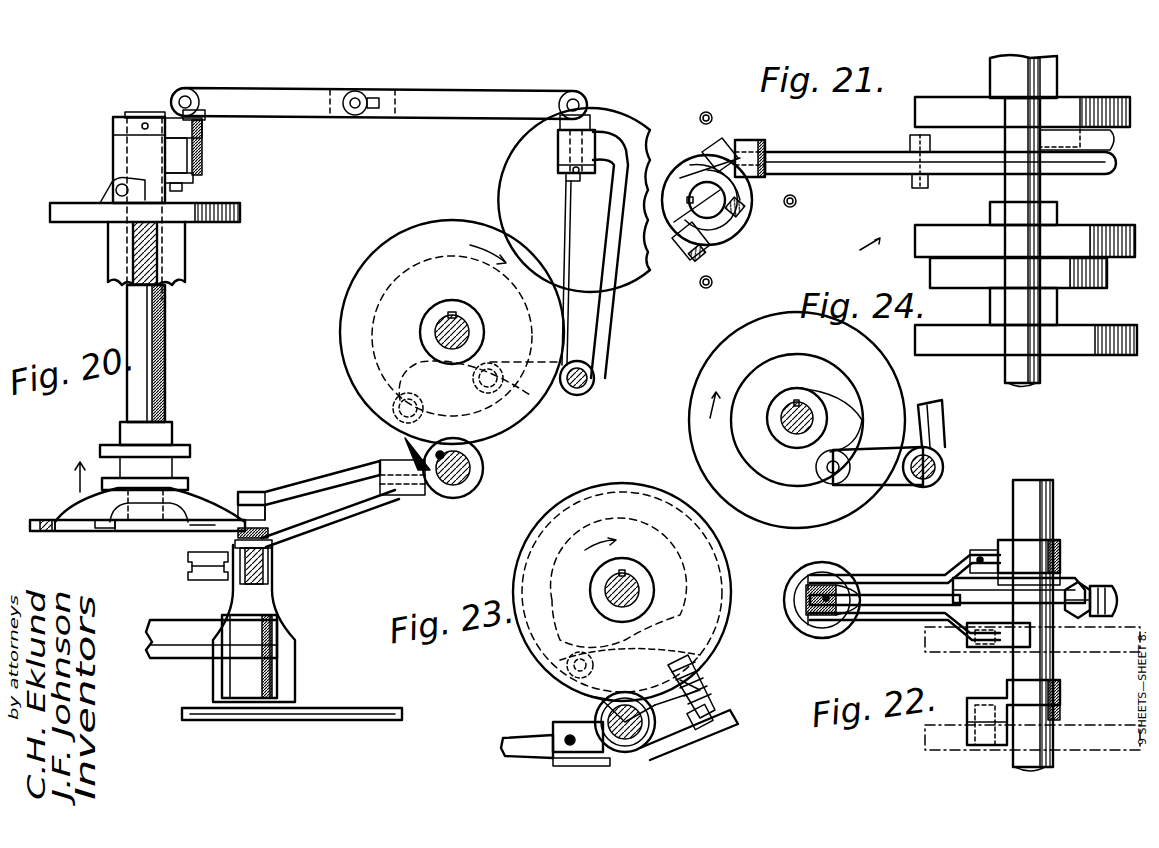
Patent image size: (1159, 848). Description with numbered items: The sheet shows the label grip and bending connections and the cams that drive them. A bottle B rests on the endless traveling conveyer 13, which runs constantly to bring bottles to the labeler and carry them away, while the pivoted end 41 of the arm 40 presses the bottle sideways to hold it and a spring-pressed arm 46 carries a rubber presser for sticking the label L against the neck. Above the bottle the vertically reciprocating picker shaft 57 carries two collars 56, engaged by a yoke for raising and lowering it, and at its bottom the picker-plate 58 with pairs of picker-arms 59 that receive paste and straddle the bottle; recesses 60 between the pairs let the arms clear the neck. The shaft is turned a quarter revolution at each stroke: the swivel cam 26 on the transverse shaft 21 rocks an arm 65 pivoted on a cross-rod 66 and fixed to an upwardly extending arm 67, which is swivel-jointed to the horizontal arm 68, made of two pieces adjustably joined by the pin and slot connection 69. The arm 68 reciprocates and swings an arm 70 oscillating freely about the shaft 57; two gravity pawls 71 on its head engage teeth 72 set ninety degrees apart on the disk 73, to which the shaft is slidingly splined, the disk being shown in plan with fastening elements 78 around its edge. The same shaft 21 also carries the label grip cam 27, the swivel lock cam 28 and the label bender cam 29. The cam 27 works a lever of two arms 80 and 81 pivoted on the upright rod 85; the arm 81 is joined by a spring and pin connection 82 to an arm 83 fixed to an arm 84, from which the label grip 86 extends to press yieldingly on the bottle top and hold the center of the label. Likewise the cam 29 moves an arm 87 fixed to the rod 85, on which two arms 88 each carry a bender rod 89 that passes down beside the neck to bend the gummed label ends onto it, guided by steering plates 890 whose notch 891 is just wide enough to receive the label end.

In FIG. 20, the traveling conveyer 13 is at (260, 720).
In FIG. 20, the second transverse shaft 21 is at (455, 318).
In FIG. 21, the second transverse shaft 21 is at (1005, 185).
In FIG. 24, the second transverse shaft 21 is at (787, 425).
In FIG. 23, the second transverse shaft 21 is at (640, 590).
In FIG. 21, the swivel cam 26 is at (1075, 97).
In FIG. 24, the swivel cam 26 is at (692, 462).
In FIG. 21, the label grip cam 27 is at (1078, 230).
In FIG. 23, the label grip cam 27 is at (730, 618).
In FIG. 22, the label grip cam 27 is at (1092, 652).
In FIG. 21, the swivel lock cam 28 is at (1080, 288).
In FIG. 20, the label bender cam 29 is at (428, 235).
In FIG. 21, the label bender cam 29 is at (1103, 355).
In FIG. 22, the label bender cam 29 is at (1096, 726).
In FIG. 20, the arm 40 is at (175, 655).
In FIG. 20, the pivoted end 41 is at (276, 688).
In FIG. 20, the spring-pressed arm 46 is at (200, 581).
In FIG. 20, the collars 56 is at (193, 460).
In FIG. 20, the picker shaft 57 is at (160, 365).
In FIG. 21, the picker shaft 57 is at (710, 210).
In FIG. 20, the picker-plate 58 is at (150, 496).
In FIG. 20, the picker-arms 59 is at (82, 533).
In FIG. 20, the recesses 60 is at (110, 534).
In FIG. 20, the arm 65 is at (562, 388).
In FIG. 21, the arm 65 is at (1092, 150).
In FIG. 24, the arm 65 is at (862, 455).
In FIG. 20, the cross-rod 66 is at (594, 382).
In FIG. 24, the cross-rod 66 is at (942, 475).
In FIG. 20, the upwardly extending arm 67 is at (608, 316).
In FIG. 24, the upwardly extending arm 67 is at (945, 425).
In FIG. 20, the horizontal arm 68 is at (475, 86).
In FIG. 21, the horizontal arm 68 is at (862, 164).
In FIG. 20, the pin and slot connection 69 is at (355, 91).
In FIG. 21, the pin and slot connection 69 is at (930, 143).
In FIG. 20, the arm 70 is at (204, 146).
In FIG. 21, the arm 70 is at (752, 183).
In FIG. 20, the gravity pawls 71 is at (112, 188).
In FIG. 21, the gravity pawls 71 is at (708, 152).
In FIG. 20, the teeth 72 is at (190, 199).
In FIG. 21, the teeth 72 is at (690, 175).
In FIG. 20, the disk 73 is at (205, 222).
In FIG. 21, the disk 73 is at (806, 228).
In FIG. 21, the screw 78 is at (705, 111).
In FIG. 23, the lever arm 80 is at (585, 702).
In FIG. 22, the lever arm 80 is at (972, 615).
In FIG. 23, the lever arm 81 is at (676, 744).
In FIG. 23, the spring and pin connection 82 is at (705, 685).
In FIG. 22, the spring and pin connection 82 is at (1110, 586).
In FIG. 23, the arm 83 is at (645, 680).
In FIG. 22, the arm 83 is at (1078, 585).
In FIG. 23, the arm 84 is at (570, 756).
In FIG. 20, the upright horizontal rod 85 is at (472, 474).
In FIG. 23, the upright horizontal rod 85 is at (628, 740).
In FIG. 22, the upright horizontal rod 85 is at (1053, 508).
In FIG. 20, the label grip 86 is at (250, 492).
In FIG. 23, the label grip 86 is at (512, 757).
In FIG. 22, the label grip 86 is at (912, 598).
In FIG. 20, the arm 87 is at (406, 443).
In FIG. 22, the arm 87 is at (1005, 698).
In FIG. 20, the arms 88 is at (408, 496).
In FIG. 22, the arms 88 is at (980, 548).
In FIG. 20, the bender rod 89 is at (292, 538).
In FIG. 22, the bender rod 89 is at (876, 575).
In FIG. 20, the steering plates 890 is at (240, 545).
In FIG. 22, the steering plates 890 is at (830, 578).
In FIG. 20, the notch 891 is at (262, 562).
In FIG. 20, the bottle B is at (290, 665).
In FIG. 22, the bottle B is at (786, 583).
In FIG. 20, the label L is at (274, 588).